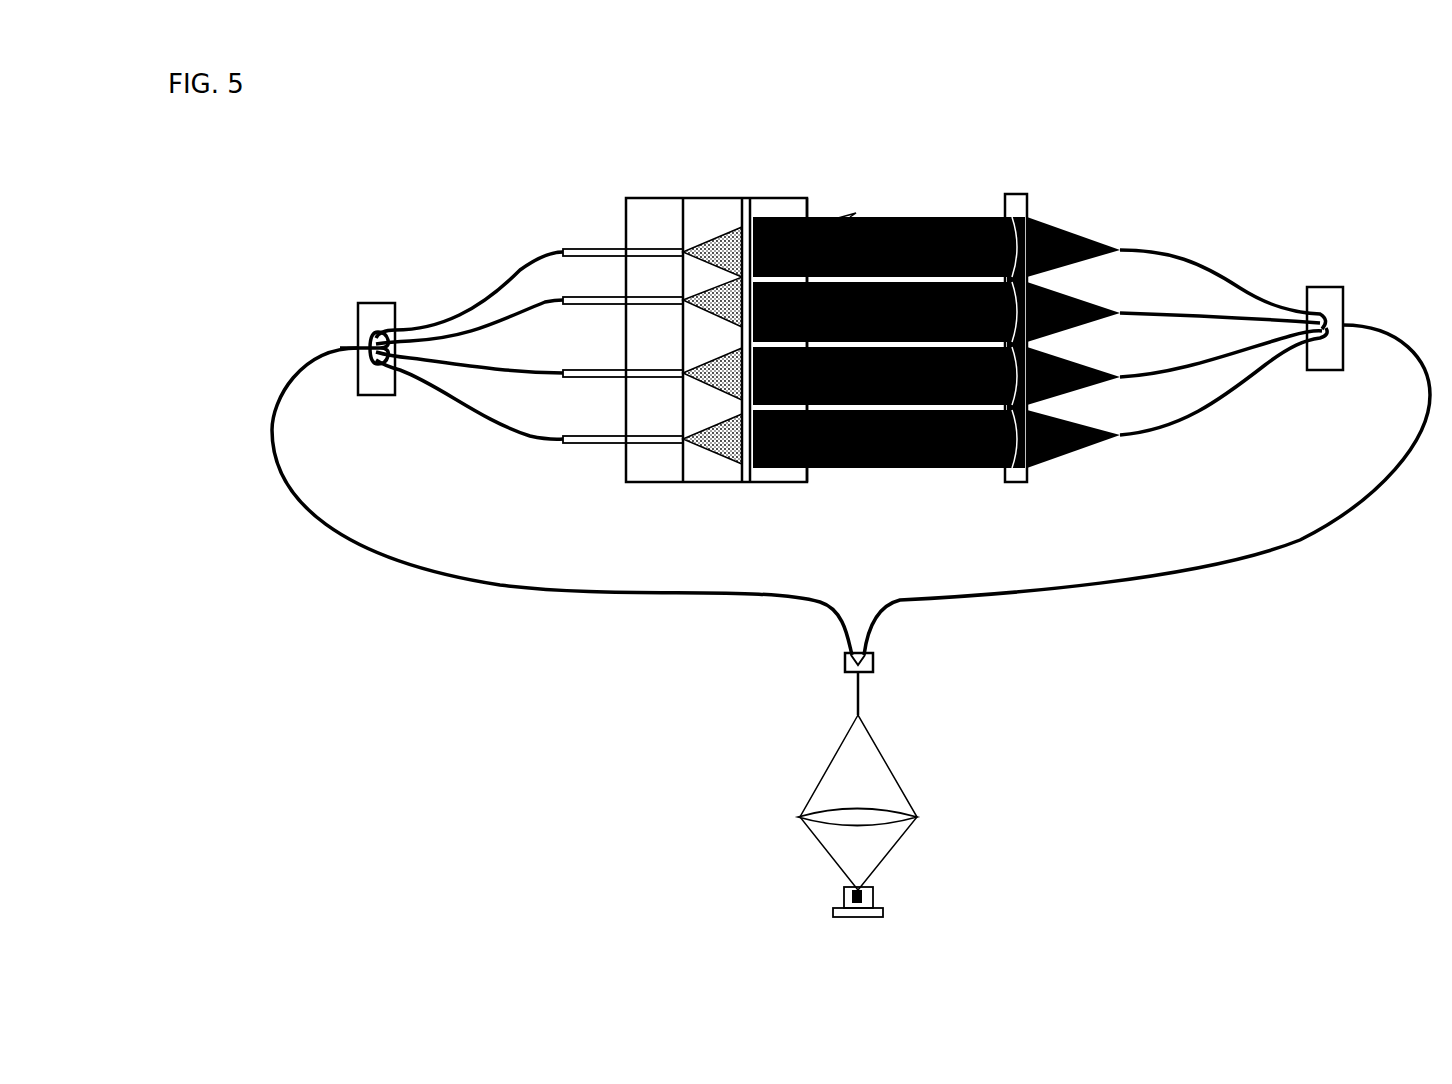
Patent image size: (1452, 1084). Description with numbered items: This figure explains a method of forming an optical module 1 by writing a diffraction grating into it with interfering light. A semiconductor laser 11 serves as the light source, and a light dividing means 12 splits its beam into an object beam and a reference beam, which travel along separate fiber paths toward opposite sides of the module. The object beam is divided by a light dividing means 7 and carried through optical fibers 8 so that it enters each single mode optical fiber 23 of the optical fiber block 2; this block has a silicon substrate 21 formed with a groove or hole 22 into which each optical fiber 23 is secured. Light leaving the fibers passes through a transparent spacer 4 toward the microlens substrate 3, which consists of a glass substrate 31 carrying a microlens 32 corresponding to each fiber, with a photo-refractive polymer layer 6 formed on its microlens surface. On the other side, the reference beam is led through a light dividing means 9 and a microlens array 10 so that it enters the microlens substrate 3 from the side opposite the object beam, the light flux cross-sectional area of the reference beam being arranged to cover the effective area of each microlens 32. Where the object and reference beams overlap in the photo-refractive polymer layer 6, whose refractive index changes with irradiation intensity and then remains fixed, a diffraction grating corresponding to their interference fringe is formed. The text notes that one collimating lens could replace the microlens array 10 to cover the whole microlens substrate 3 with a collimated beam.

The optical module 1 is at (658, 172).
The optical fiber block 2 is at (598, 315).
The microlens substrate 3 is at (880, 337).
The transparent spacer 4 is at (700, 470).
The photo-refractive polymer layer 6 is at (748, 218).
The light dividing means 7 is at (379, 306).
The optical fibers 8 is at (451, 311).
The light dividing means 9 is at (1318, 292).
The microlens array 10 is at (1016, 198).
The semiconductor laser 11 is at (848, 900).
The light dividing means 12 is at (845, 660).
The silicon substrate 21 is at (628, 472).
The groove or hole 22 is at (667, 306).
The single mode optical fiber 23 is at (566, 250).
The glass substrate 31 is at (786, 210).
The microlens 32 is at (761, 472).